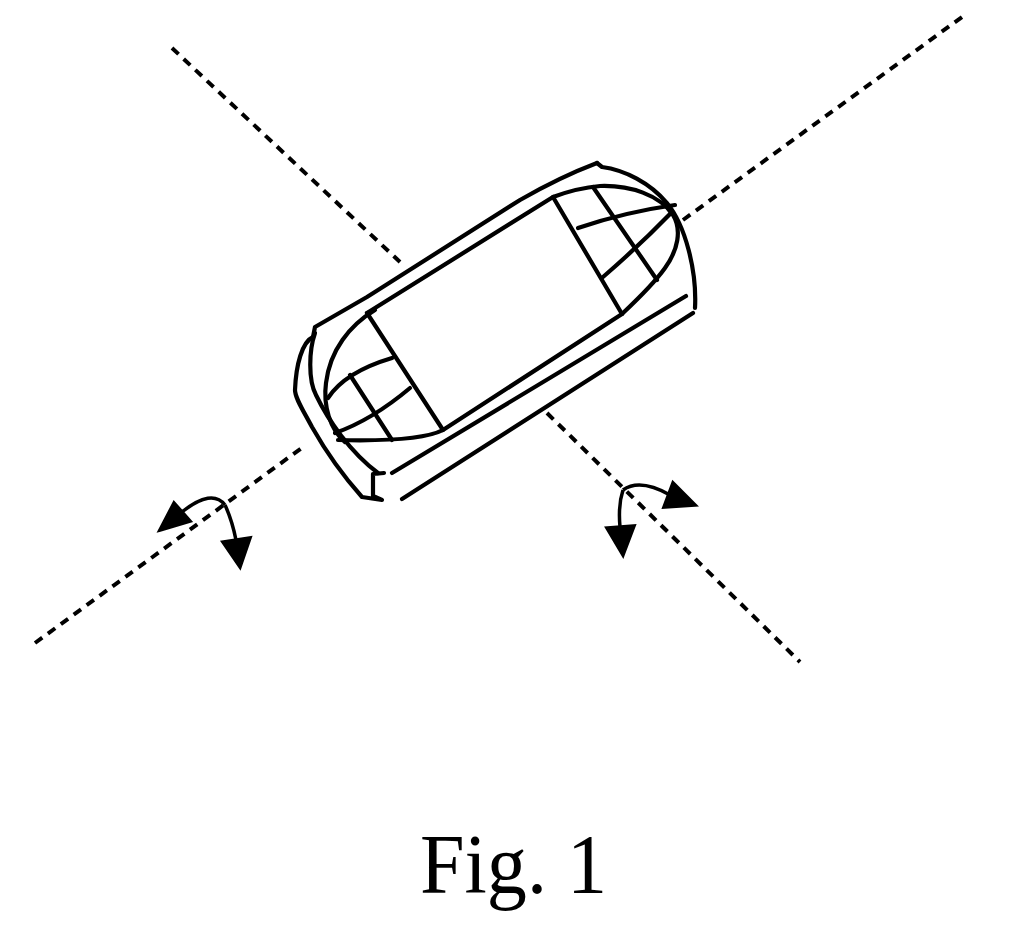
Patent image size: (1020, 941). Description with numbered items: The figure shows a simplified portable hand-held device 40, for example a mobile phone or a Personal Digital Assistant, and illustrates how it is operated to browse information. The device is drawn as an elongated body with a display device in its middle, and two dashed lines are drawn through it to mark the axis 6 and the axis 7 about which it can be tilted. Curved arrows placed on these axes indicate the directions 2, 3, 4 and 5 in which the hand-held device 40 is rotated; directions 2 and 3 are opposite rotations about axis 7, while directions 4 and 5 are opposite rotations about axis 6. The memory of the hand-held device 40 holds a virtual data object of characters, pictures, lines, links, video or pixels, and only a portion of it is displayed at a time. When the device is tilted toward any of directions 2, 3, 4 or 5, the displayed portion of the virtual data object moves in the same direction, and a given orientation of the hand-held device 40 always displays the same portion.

The hand-held device 40 is at (597, 163).
The axis 6 is at (248, 120).
The axis 7 is at (740, 183).
The direction 2 is at (171, 511).
The direction 3 is at (237, 567).
The direction 4 is at (620, 551).
The direction 5 is at (679, 513).